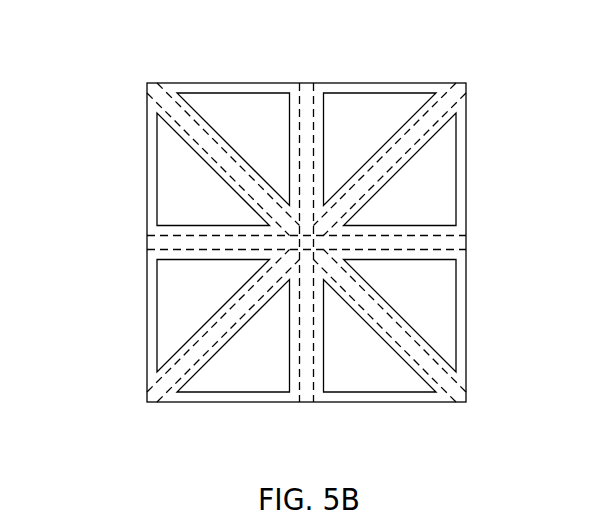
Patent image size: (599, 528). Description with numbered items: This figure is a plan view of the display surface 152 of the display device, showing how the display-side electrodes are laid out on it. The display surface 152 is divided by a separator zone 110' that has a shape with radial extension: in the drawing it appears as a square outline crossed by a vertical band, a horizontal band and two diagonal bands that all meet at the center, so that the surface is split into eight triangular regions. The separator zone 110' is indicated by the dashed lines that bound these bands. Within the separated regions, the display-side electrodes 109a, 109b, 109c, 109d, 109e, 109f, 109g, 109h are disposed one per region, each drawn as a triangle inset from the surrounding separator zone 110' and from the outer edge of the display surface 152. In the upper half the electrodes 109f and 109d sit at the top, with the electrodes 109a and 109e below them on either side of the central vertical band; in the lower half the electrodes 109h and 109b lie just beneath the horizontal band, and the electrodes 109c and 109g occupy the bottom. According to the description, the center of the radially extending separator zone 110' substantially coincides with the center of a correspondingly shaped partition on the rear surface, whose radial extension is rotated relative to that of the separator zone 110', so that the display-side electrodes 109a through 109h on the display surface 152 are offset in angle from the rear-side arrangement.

The display surface 152 is at (145, 120).
The separator zone 110' is at (357, 225).
The display-side electrode 109a is at (213, 172).
The display-side electrode 109b is at (400, 316).
The display-side electrode 109c is at (233, 336).
The display-side electrode 109d is at (380, 149).
The display-side electrode 109e is at (400, 171).
The display-side electrode 109f is at (233, 149).
The display-side electrode 109g is at (380, 336).
The display-side electrode 109h is at (213, 316).